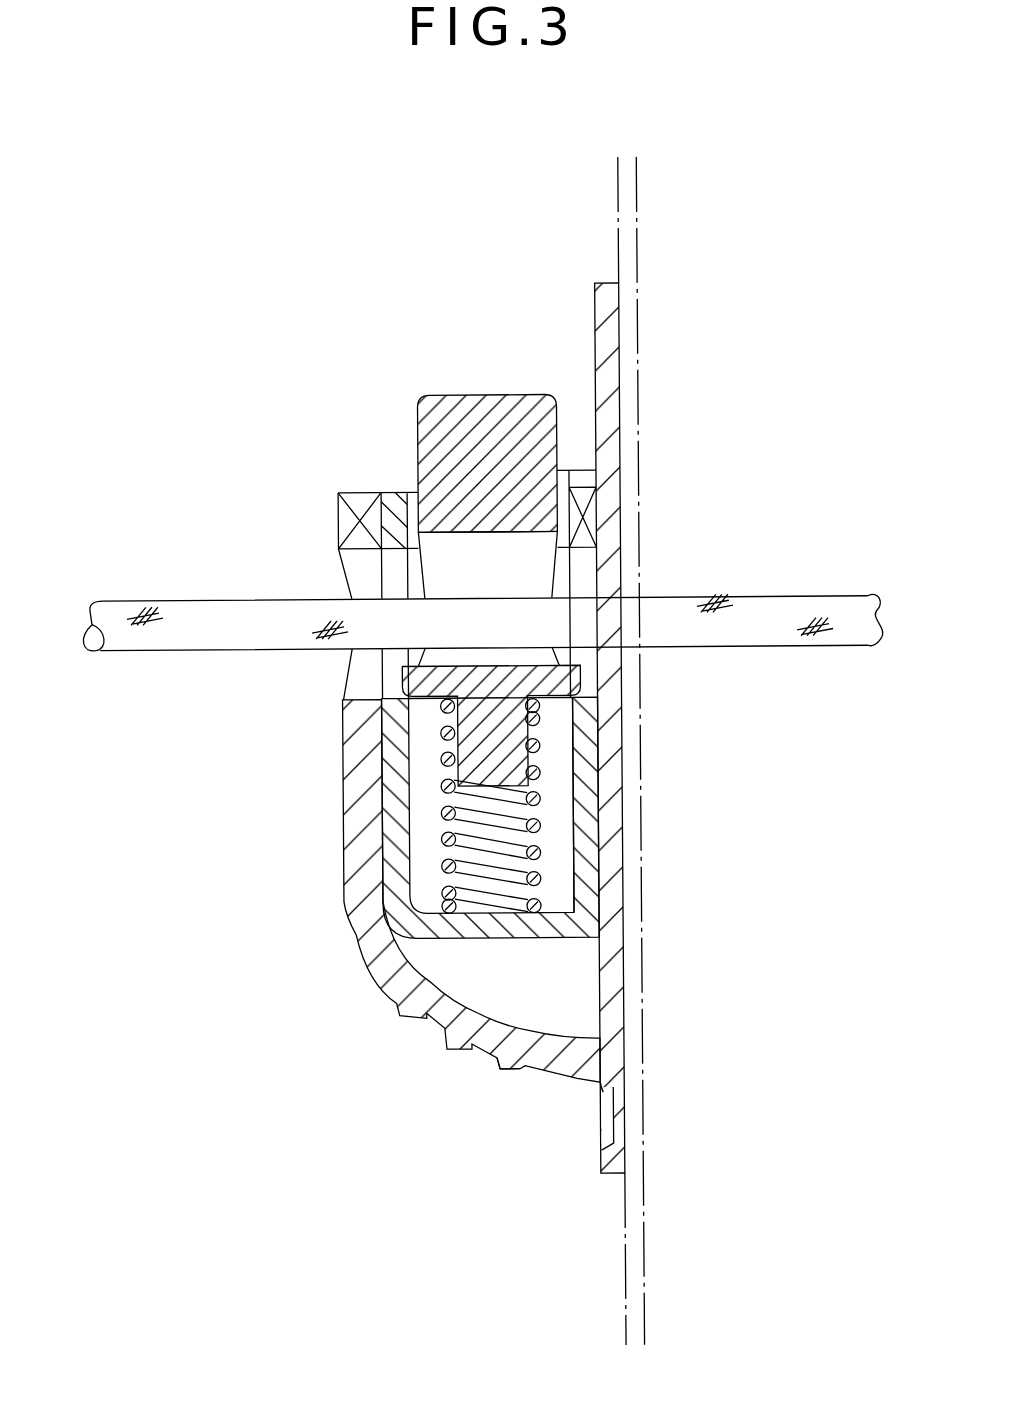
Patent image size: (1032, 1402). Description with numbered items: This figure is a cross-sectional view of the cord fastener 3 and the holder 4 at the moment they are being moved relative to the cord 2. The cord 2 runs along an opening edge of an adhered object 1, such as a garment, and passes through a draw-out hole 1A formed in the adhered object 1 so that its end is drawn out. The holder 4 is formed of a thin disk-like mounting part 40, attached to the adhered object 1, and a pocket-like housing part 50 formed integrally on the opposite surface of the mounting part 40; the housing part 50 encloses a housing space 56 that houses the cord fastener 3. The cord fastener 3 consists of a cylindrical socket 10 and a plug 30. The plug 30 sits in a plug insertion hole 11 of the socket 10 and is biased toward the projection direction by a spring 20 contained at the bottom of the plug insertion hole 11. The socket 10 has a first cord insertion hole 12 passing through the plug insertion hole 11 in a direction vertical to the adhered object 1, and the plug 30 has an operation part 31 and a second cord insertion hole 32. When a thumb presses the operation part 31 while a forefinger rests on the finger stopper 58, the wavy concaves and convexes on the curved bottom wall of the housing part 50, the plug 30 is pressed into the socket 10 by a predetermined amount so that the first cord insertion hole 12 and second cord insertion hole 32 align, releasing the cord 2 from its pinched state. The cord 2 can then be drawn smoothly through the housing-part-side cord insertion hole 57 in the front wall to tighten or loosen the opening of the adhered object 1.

The adhered object 1 is at (630, 207).
The draw-out hole 1A is at (621, 587).
The cord 2 is at (792, 607).
The cord fastener 3 is at (410, 469).
The holder 4 is at (466, 925).
The socket 10 is at (575, 908).
The plug insertion hole 11 is at (560, 737).
The first cord insertion hole 12 is at (402, 673).
The spring 20 is at (550, 817).
The plug 30 is at (435, 398).
The operation part 31 is at (481, 394).
The second cord insertion hole 32 is at (402, 525).
The mounting part 40 is at (605, 408).
The housing part 50 is at (342, 823).
The housing space 56 is at (560, 997).
The housing-part-side cord insertion hole 57 is at (343, 573).
The finger stopper 58 is at (510, 1070).